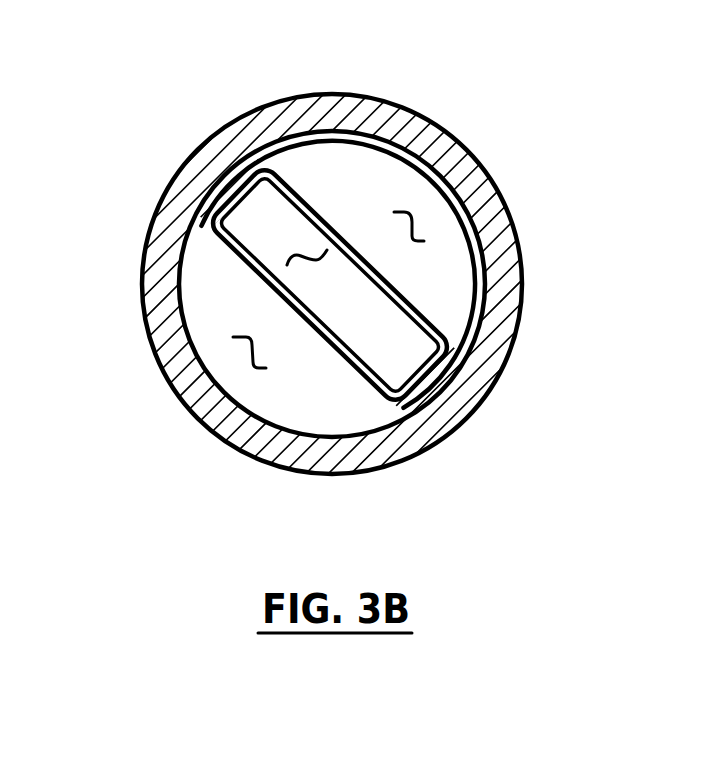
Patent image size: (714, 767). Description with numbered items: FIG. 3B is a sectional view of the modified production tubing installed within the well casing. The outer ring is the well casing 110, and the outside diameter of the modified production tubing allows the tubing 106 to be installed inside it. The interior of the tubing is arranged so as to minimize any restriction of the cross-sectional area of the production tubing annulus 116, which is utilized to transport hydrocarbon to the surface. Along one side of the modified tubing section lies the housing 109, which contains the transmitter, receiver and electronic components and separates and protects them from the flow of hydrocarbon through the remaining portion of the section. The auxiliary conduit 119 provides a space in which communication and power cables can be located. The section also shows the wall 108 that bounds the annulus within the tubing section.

The well casing 110 is at (173, 178).
The tubing 106 is at (375, 387).
The septum slot wall 108 is at (417, 293).
The production tubing annulus 116 is at (305, 253).
The housing 109 is at (414, 224).
The auxiliary conduit 119 is at (251, 351).